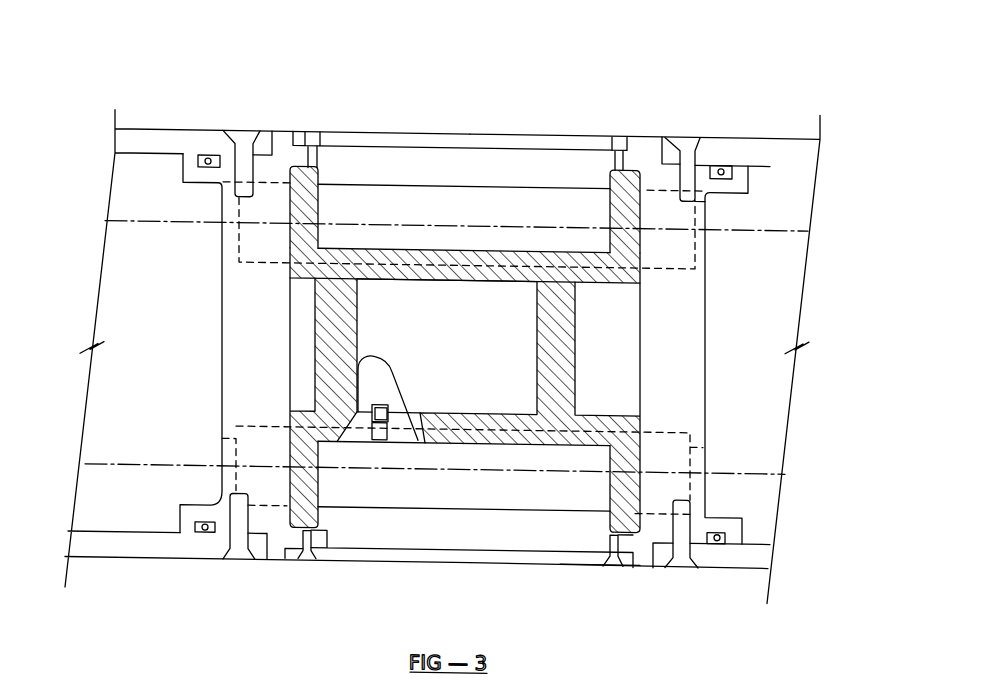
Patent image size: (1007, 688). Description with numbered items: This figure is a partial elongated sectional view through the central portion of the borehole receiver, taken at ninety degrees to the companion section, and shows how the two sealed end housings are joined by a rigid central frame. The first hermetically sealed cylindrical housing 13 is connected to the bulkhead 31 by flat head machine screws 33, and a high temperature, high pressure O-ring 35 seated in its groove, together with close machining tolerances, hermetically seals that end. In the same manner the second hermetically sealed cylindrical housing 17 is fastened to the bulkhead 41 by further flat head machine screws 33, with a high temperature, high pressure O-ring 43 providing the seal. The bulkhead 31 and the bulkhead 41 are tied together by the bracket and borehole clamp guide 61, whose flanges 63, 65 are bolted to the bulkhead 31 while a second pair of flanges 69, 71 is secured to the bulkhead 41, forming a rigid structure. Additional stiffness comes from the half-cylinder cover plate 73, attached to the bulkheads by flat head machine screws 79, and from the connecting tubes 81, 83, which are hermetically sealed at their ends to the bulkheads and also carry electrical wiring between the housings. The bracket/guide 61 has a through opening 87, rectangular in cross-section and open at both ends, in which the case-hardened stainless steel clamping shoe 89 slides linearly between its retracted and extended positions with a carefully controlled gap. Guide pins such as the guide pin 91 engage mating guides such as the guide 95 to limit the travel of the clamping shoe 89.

The first hermetically sealed cylindrical housing 13 is at (101, 555).
The second hermetically sealed cylindrical housing 17 is at (751, 557).
The bulkhead 31 is at (283, 544).
The flat head machine screws 33 is at (240, 127).
The O-ring 35 is at (203, 529).
The bulkhead 41 is at (688, 328).
The O-ring 43 is at (724, 155).
The bracket and borehole clamp guide 61 is at (577, 341).
The flange 63 is at (312, 523).
The flange 65 is at (318, 176).
The flange 69 is at (581, 557).
The flange 71 is at (612, 203).
The half-cylinder cover plate 73 is at (462, 550).
The flat head machine screws 79 is at (313, 126).
The connecting tube 81 is at (503, 484).
The connecting tube 83 is at (490, 179).
The through opening 87 is at (400, 265).
The clamping shoe 89 is at (415, 322).
The guide pin 91 is at (385, 434).
The guide 95 is at (386, 399).